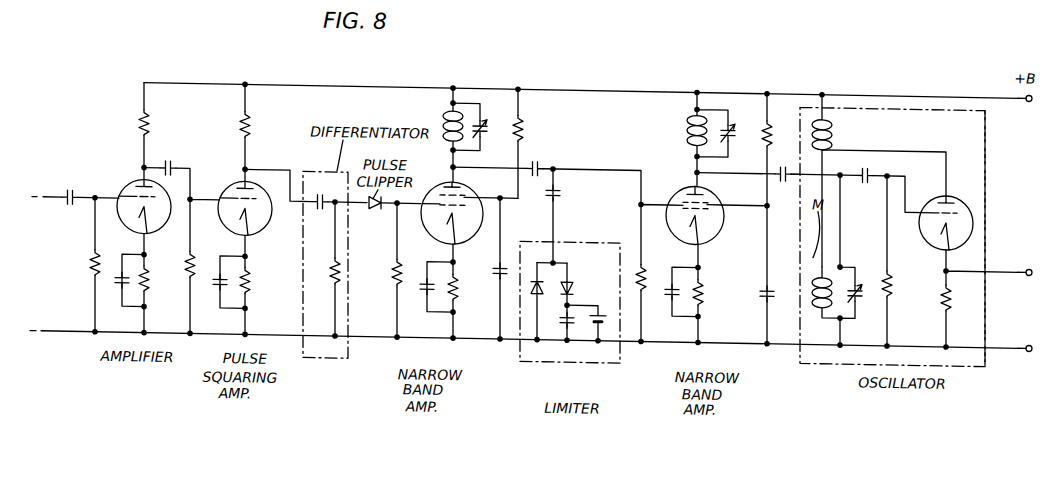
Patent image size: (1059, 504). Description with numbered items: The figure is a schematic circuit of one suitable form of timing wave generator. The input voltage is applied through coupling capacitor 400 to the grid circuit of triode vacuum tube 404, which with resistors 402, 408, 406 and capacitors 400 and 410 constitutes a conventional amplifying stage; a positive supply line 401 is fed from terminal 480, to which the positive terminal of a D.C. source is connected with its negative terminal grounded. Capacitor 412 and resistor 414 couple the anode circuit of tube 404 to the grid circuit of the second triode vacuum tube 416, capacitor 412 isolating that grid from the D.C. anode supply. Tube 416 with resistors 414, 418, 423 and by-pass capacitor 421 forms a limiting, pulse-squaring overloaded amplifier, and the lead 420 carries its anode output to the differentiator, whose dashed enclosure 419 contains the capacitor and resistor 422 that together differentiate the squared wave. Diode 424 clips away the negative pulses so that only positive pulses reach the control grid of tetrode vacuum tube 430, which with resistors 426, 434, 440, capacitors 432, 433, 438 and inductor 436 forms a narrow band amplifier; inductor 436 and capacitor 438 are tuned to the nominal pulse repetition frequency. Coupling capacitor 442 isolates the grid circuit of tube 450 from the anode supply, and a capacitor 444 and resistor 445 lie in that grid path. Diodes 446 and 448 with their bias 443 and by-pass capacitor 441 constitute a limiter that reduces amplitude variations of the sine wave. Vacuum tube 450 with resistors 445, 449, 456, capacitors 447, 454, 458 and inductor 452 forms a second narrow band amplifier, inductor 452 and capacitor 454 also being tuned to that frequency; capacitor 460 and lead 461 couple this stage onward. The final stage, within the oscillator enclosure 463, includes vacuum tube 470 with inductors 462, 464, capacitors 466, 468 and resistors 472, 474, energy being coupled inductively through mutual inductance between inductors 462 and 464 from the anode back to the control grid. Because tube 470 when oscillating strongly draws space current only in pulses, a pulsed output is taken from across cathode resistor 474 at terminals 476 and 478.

The coupling capacitor 400 is at (70, 181).
The B+ supply line 401 is at (182, 80).
The resistor 402 is at (90, 263).
The triode vacuum tube 404 is at (129, 178).
The resistor 406 is at (155, 116).
The resistor 408 is at (155, 272).
The capacitor 410 is at (108, 281).
The capacitor 412 is at (171, 157).
The resistor 414 is at (182, 277).
The triode vacuum tube 416 is at (237, 231).
The resistor 418 is at (254, 114).
The differentiator capacitor 419 is at (311, 166).
The capacitor 420 is at (294, 228).
The by-pass capacitor 421 is at (202, 283).
The resistor 422 is at (323, 257).
The resistor 423 is at (251, 285).
The diode 424 is at (375, 211).
The resistor 426 is at (387, 268).
The tetrode vacuum tube 430 is at (481, 224).
The capacitor 432 is at (418, 286).
The capacitor 433 is at (513, 268).
The resistor 434 is at (460, 287).
The inductor 436 is at (442, 109).
The capacitor 438 is at (487, 124).
The resistor 440 is at (524, 118).
The by-pass capacitor 441 is at (555, 308).
The coupling capacitor 442 is at (538, 150).
The bias 443 is at (610, 309).
The capacitor 444 is at (568, 183).
The resistor 445 is at (640, 252).
The diode 446 is at (532, 270).
The capacitor 447 is at (663, 278).
The diode 448 is at (575, 280).
The resistor 449 is at (703, 277).
The vacuum tube 450 is at (722, 220).
The inductor 452 is at (687, 116).
The capacitor 454 is at (744, 117).
The resistor 456 is at (771, 114).
The capacitor 458 is at (753, 276).
The coupling capacitor 460 is at (778, 164).
The coupling lead 461 is at (793, 171).
The inductor 462 is at (829, 115).
The oscillator 463 is at (972, 351).
The inductor 464 is at (820, 295).
The capacitor 466 is at (868, 264).
The capacitor 468 is at (872, 154).
The vacuum tube 470 is at (934, 180).
The resistor 472 is at (892, 281).
The cathode resistor 474 is at (943, 280).
The terminal 476 is at (1029, 251).
The terminal 478 is at (1029, 334).
The terminal 480 is at (1031, 85).